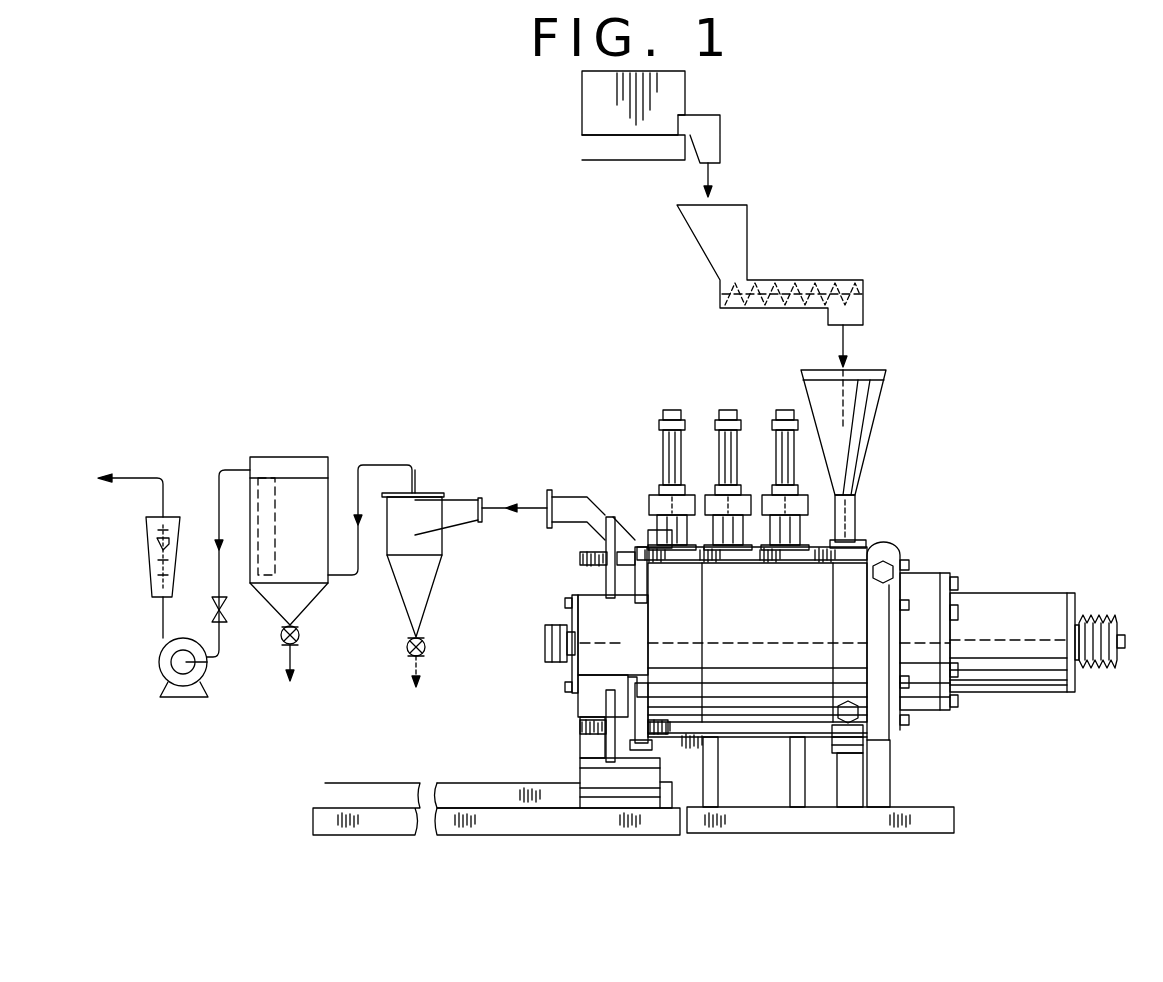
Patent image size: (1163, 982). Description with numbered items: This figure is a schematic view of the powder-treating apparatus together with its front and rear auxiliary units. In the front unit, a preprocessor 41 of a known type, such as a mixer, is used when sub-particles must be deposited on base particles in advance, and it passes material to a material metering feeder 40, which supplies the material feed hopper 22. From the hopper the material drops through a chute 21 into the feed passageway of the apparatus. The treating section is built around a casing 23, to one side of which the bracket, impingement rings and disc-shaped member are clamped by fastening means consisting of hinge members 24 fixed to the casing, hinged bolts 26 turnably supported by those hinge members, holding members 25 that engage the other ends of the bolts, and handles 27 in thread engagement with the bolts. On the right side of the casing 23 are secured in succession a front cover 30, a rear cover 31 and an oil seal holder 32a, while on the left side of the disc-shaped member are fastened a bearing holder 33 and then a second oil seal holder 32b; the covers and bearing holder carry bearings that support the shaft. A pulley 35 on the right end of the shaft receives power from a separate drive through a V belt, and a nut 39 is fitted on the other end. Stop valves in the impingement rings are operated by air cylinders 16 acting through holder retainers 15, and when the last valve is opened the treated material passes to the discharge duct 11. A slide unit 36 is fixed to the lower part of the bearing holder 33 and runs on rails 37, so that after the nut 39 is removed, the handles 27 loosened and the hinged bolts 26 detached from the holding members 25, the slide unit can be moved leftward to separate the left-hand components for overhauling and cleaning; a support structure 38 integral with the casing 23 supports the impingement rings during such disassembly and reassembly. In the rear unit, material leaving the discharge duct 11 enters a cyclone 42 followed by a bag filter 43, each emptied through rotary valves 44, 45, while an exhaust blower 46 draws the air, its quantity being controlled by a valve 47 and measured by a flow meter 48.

The discharge duct 11 is at (567, 495).
The holder retainer 15 is at (651, 530).
The air cylinder 16 is at (661, 447).
The chute 21 is at (858, 515).
The material feed hopper 22 is at (880, 417).
The casing 23 is at (883, 770).
The hinge members 24 is at (830, 755).
The holding members 25 is at (640, 740).
The hinged bolts 26 is at (745, 730).
The handles 27 is at (610, 762).
The front cover 30 is at (930, 705).
The rear cover 31 is at (1008, 690).
The oil seal holder 32a is at (1075, 690).
The oil seal holder 32b is at (575, 672).
The bearing holder 33 is at (587, 590).
The pulley 35 is at (1092, 615).
The slide unit 36 is at (586, 778).
The rails 37 is at (455, 783).
The support structure 38 is at (848, 793).
The nut 39 is at (547, 628).
The material metering feeder 40 is at (782, 280).
The preprocessor 41 is at (685, 93).
The cyclone 42 is at (428, 492).
The bag filter 43 is at (328, 485).
The rotary valve 44 is at (427, 648).
The rotary valve 45 is at (300, 635).
The exhaust blower 46 is at (160, 664).
The valve 47 is at (225, 613).
The flow meter 48 is at (148, 548).